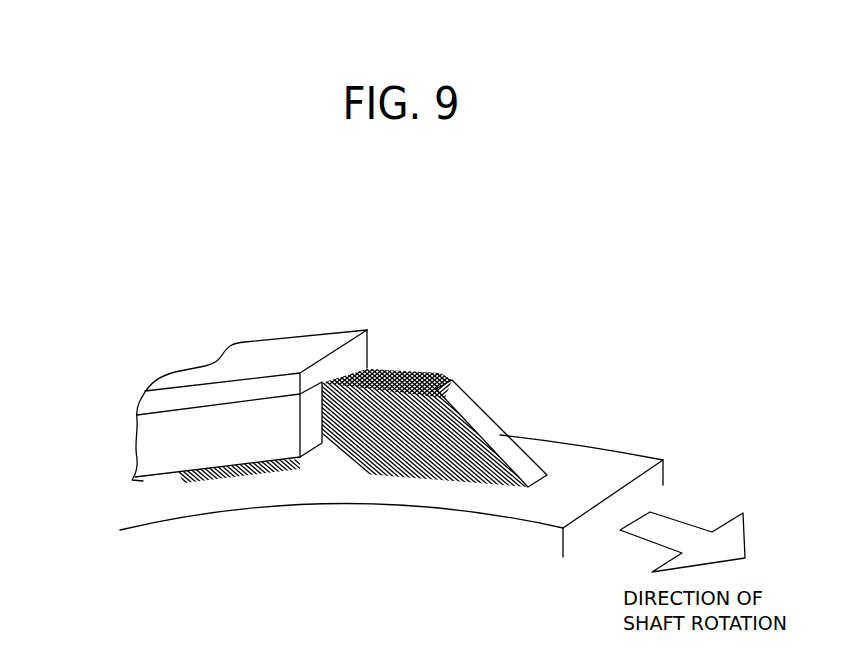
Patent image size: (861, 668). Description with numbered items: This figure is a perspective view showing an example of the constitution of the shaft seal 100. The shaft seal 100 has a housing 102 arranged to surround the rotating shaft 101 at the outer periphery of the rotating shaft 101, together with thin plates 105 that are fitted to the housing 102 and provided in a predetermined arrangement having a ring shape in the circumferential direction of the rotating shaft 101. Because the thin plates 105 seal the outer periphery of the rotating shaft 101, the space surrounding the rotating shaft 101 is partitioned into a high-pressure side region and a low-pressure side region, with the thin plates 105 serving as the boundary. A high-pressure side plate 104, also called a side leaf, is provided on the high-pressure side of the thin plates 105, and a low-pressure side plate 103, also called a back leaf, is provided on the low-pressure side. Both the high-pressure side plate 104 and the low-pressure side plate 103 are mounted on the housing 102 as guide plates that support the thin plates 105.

The shaft seal 100 is at (382, 320).
The rotating shaft 101 is at (667, 475).
The housing 102 is at (283, 335).
The low-pressure side plate (back leaf) 103 is at (368, 358).
The high-pressure side plate (side leaf) 104 is at (132, 485).
The thin plates 105 is at (467, 405).